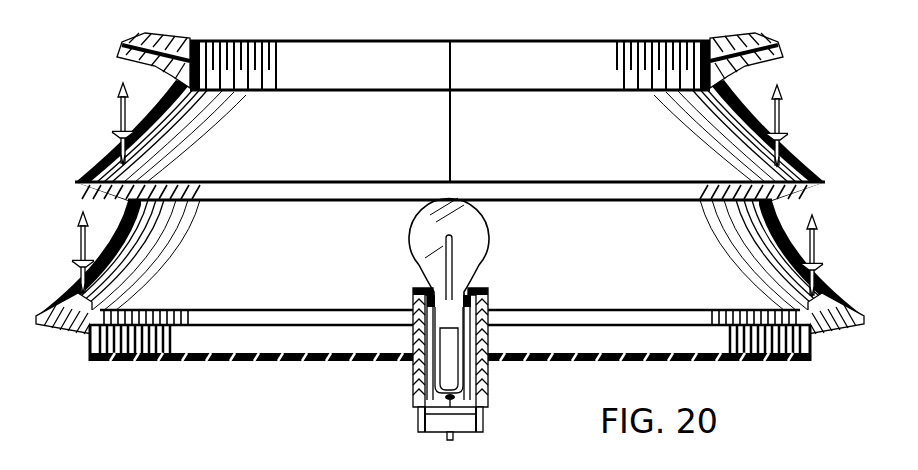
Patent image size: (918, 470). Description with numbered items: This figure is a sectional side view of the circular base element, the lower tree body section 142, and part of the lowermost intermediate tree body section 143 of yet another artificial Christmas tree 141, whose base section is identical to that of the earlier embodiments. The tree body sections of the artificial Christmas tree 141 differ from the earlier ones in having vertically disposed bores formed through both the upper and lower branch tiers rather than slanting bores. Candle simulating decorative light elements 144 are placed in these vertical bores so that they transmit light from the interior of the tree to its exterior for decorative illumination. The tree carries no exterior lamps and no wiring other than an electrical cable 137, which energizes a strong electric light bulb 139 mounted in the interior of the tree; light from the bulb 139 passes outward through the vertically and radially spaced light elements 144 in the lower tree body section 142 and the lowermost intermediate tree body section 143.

The electrical cable 137 is at (445, 436).
The light bulb 139 is at (488, 238).
The artificial Christmas tree 141 is at (92, 128).
The lower tree body section 142 is at (70, 288).
The lowermost intermediate tree body section 143 is at (118, 52).
The candle simulating decorative light elements 144 is at (82, 219).